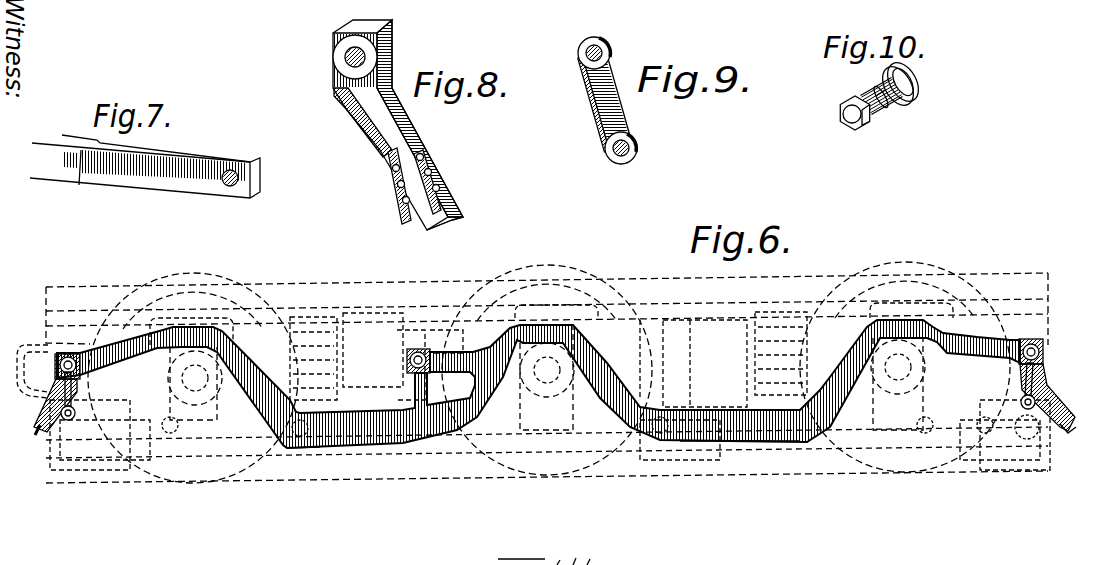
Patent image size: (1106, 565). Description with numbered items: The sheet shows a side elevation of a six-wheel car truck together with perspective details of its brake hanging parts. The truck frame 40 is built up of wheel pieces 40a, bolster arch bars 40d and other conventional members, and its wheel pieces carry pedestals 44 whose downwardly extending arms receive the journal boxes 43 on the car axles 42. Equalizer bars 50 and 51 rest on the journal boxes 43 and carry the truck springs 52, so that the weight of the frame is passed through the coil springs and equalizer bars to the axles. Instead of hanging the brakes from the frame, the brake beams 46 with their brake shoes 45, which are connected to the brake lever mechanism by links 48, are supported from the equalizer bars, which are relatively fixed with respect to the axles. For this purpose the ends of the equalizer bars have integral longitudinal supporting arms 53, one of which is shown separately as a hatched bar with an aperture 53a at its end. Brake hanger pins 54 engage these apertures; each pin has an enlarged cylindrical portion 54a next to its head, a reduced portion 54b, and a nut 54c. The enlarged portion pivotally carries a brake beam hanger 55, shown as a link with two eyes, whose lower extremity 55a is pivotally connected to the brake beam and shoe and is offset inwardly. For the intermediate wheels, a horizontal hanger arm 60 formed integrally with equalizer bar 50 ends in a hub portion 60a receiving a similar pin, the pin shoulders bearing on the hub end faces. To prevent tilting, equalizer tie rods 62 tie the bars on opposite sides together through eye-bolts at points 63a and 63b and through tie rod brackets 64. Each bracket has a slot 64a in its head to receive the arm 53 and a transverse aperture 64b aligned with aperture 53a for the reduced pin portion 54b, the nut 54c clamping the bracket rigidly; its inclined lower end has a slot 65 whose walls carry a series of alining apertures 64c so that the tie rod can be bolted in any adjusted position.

In FIG. 6, the truck frame 40 is at (985, 272).
In FIG. 6, the wheel pieces 40a is at (798, 285).
In FIG. 6, the bolster arch bars 40d is at (610, 265).
In FIG. 6, the car axles 42 is at (925, 320).
In FIG. 6, the journal boxes 43 is at (215, 395).
In FIG. 6, the pedestals 44 is at (960, 302).
In FIG. 6, the brake shoes 45 is at (1000, 465).
In FIG. 6, the brake beams 46 is at (1040, 445).
In FIG. 6, the links 48 is at (982, 465).
In FIG. 6, the equalizer bar 50 is at (330, 444).
In FIG. 6, the equalizer bar 51 is at (790, 445).
In FIG. 6, the truck springs 52 is at (728, 432).
In FIG. 7, the supporting arms 53 is at (160, 153).
In FIG. 6, the supporting arms 53 is at (1010, 340).
In FIG. 7, the apertures 53a is at (233, 186).
In FIG. 10, the brake hanger pins 54 is at (886, 108).
In FIG. 6, the brake hanger pins 54 is at (1042, 350).
In FIG. 10, the enlarged cylindrical portions 54a is at (915, 95).
In FIG. 10, the reduced portions 54b is at (880, 92).
In FIG. 10, the nuts 54c is at (860, 130).
In FIG. 9, the brake beam hangers 55 is at (592, 92).
In FIG. 6, the brake beam hangers 55 is at (1020, 402).
In FIG. 9, the lower extremities 55a is at (632, 153).
In FIG. 6, the hanger arms 60 is at (422, 349).
In FIG. 6, the hub portions 60a is at (410, 355).
In FIG. 6, the equalizer tie rods 62 is at (37, 436).
In FIG. 6, the aperture point 63a is at (290, 450).
In FIG. 6, the aperture point 63b is at (757, 443).
In FIG. 8, the tie rod brackets 64 is at (348, 127).
In FIG. 6, the tie rod brackets 64 is at (1050, 397).
In FIG. 8, the slots 64a is at (397, 42).
In FIG. 8, the transverse apertures 64b is at (345, 58).
In FIG. 8, the alining apertures 64c is at (447, 172).
In FIG. 8, the slots 65 is at (422, 212).
In FIG. 6, the slots 65 is at (1066, 434).